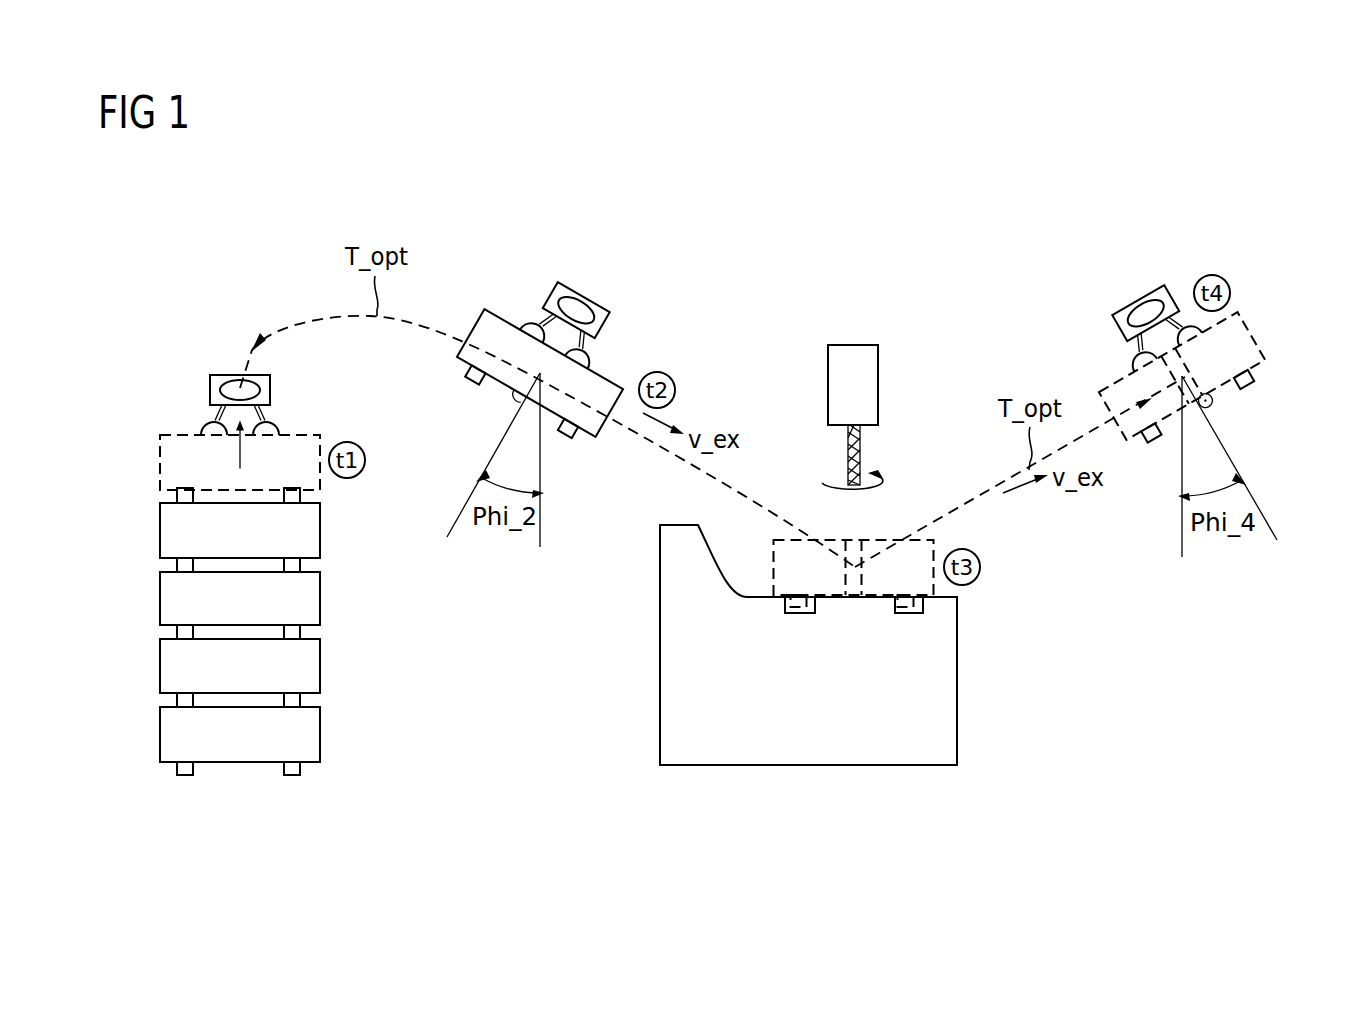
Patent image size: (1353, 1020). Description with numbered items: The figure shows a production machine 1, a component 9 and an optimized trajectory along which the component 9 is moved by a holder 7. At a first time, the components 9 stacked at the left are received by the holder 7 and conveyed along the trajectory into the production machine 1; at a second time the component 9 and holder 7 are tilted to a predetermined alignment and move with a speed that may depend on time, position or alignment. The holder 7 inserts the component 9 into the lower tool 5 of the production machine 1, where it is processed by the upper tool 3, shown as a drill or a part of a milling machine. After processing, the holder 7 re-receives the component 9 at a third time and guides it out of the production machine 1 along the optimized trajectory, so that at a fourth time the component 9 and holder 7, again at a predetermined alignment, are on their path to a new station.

The production machine 1 is at (884, 312).
The upper tool 3 is at (870, 385).
The lower tool 5 is at (946, 691).
The holder 7 is at (222, 388).
The component 9 is at (172, 539).